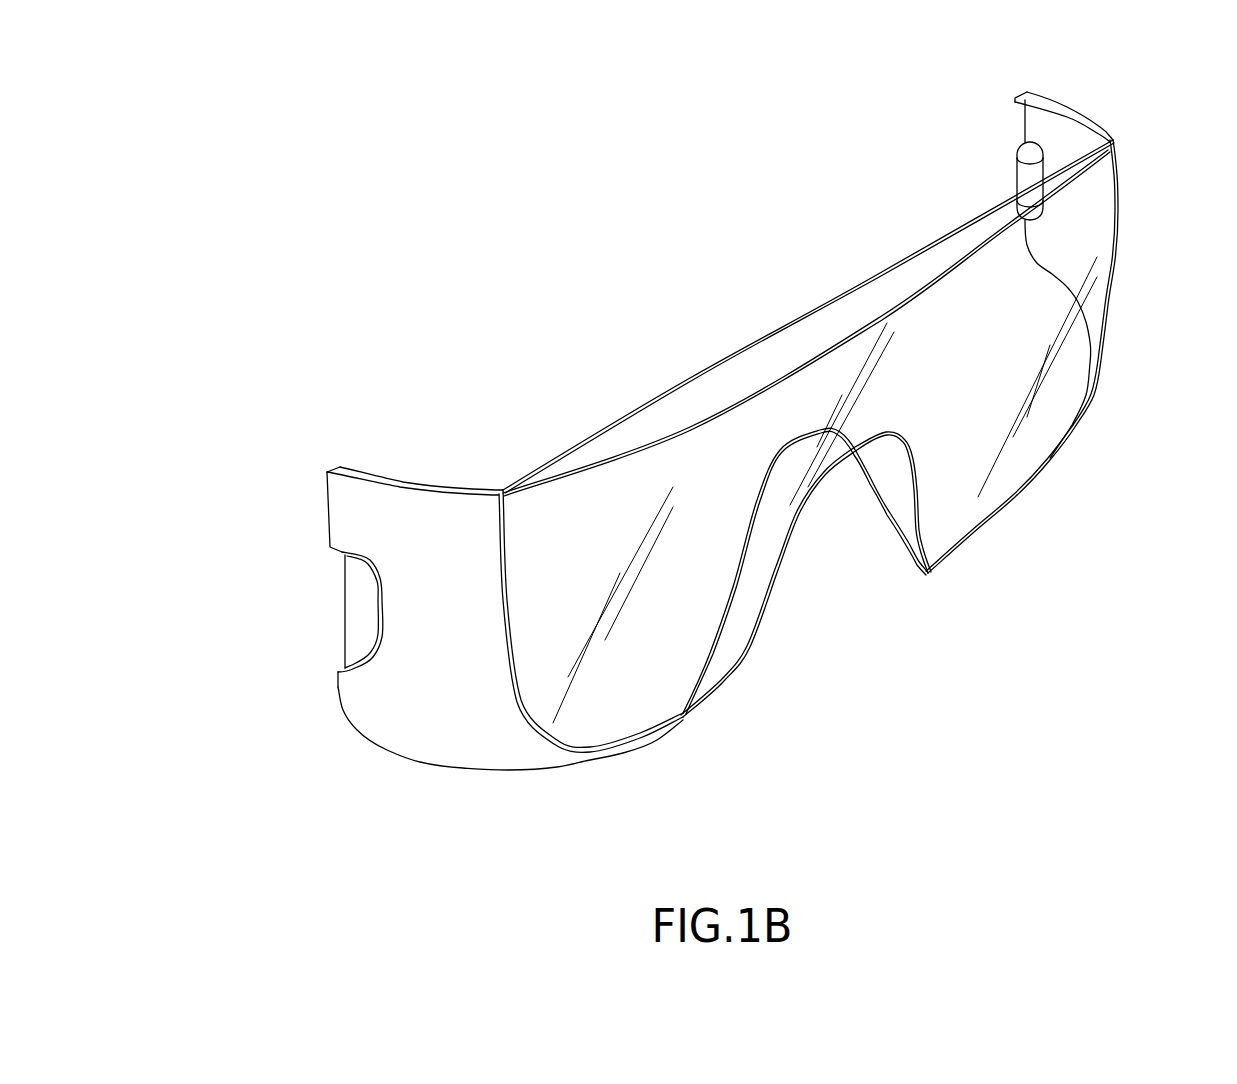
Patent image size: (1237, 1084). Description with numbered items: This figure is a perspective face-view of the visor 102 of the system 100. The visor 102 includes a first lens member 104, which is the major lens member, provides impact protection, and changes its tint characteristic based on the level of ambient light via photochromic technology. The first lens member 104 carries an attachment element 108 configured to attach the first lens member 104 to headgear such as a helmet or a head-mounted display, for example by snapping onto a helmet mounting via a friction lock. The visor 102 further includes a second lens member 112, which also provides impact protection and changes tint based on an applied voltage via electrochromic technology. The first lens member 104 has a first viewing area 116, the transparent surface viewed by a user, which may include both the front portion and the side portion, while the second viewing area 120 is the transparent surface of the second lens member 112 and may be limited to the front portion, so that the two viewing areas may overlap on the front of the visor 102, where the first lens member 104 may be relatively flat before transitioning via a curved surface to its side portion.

The system 100 is at (334, 184).
The visor 102 is at (1133, 95).
The first lens member 104 is at (413, 513).
The attachment element 108 is at (1027, 158).
The second lens member 112 is at (968, 337).
The first viewing area 116 is at (342, 500).
The second viewing area 120 is at (532, 755).